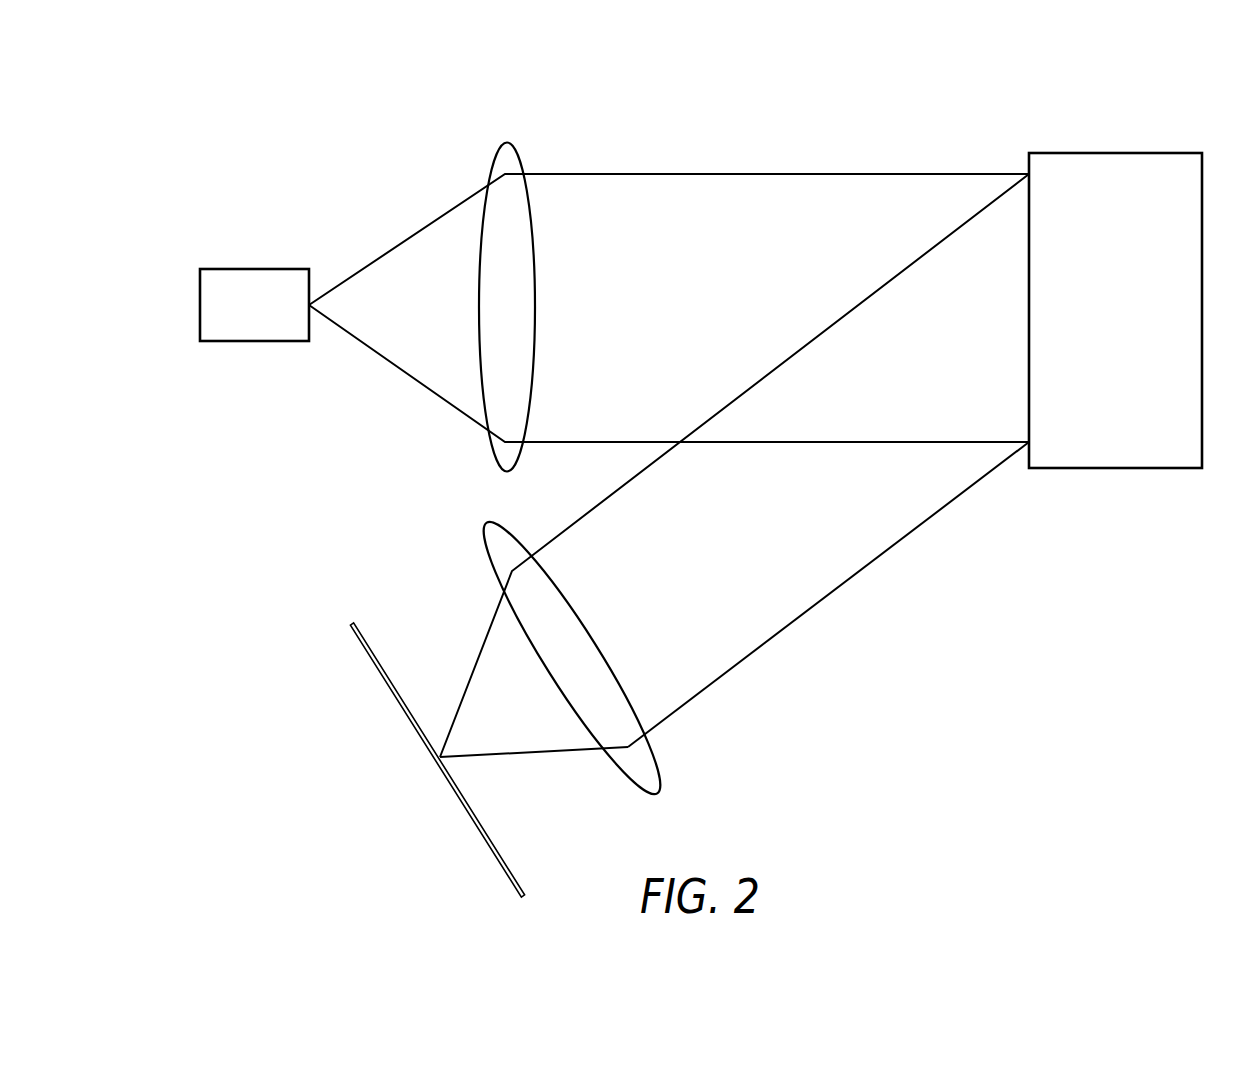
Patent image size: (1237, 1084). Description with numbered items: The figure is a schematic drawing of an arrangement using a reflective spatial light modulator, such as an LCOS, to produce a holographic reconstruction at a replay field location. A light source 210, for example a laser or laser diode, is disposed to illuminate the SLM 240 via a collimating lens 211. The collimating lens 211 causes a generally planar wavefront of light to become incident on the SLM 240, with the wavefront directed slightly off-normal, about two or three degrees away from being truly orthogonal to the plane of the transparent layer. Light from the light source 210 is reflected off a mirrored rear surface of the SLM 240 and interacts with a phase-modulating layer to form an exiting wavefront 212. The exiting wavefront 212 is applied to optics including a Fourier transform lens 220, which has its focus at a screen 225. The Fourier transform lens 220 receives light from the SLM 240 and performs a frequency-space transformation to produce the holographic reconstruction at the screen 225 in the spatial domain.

The light source 210 is at (229, 268).
The collimating lens 211 is at (506, 142).
The SLM 240 is at (1172, 153).
The exiting wavefront 212 is at (887, 553).
The Fourier transform lens 220 is at (483, 545).
The screen 225 is at (352, 640).